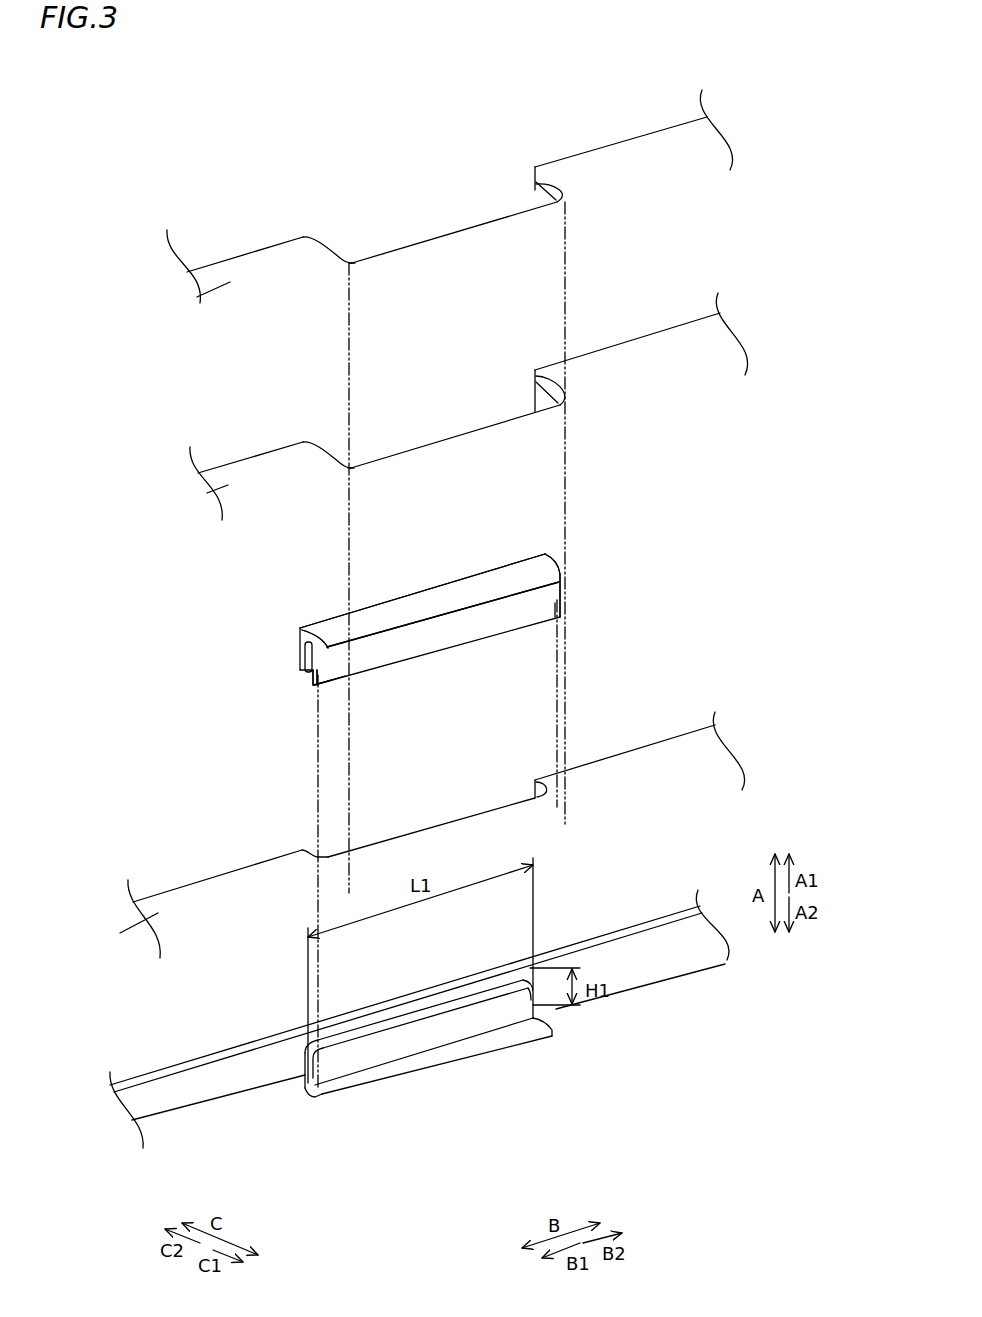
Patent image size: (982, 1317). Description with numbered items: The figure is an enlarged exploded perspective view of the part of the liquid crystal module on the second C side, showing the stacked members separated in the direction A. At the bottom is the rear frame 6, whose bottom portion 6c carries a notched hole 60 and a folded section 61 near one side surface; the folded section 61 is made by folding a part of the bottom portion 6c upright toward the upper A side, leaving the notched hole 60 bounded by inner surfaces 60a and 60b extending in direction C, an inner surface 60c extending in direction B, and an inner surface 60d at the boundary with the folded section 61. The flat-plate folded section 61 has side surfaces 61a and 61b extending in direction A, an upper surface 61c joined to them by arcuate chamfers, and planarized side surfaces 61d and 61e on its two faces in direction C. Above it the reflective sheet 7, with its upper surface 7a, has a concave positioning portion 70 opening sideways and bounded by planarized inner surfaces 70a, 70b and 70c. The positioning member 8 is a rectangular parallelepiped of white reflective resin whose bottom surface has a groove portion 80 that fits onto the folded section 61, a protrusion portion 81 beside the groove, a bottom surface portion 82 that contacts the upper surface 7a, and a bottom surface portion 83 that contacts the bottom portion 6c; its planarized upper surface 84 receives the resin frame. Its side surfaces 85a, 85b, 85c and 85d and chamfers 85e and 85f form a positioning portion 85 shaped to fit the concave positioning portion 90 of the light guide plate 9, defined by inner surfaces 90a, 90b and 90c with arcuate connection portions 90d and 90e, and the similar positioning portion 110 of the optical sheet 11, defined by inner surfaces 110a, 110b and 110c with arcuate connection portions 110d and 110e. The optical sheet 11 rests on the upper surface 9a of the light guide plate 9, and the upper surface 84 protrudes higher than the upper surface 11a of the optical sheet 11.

The rear frame 6 is at (398, 1019).
The bottom portion 6c is at (208, 1108).
The reflective sheet 7 is at (416, 833).
The upper surface 7a is at (200, 900).
The positioning member 8 is at (422, 634).
The light guide plate 9 is at (450, 406).
The upper surface 9a is at (267, 470).
The optical sheet 11 is at (441, 200).
The upper surface 11a is at (268, 267).
The notched hole 60 is at (436, 1019).
The inner surface 60a is at (308, 1097).
The inner surface 60b is at (560, 1025).
The inner surface 60c is at (470, 1058).
The inner surface 60d is at (380, 1067).
The folded section 61 is at (398, 990).
The side surface 61a is at (302, 1072).
The side surface 61b is at (540, 990).
The upper surface 61c is at (485, 990).
The side surface 61d is at (355, 1032).
The side surface 61e is at (423, 1030).
The positioning portion 70 is at (508, 782).
The inner surface 70a is at (317, 855).
The inner surface 70b is at (530, 788).
The inner surface 70c is at (450, 807).
The groove portion 80 is at (300, 660).
The protrusion portion 81 is at (316, 692).
The bottom surface portion 82 is at (330, 690).
The bottom surface portion 83 is at (305, 678).
The upper surface 84 is at (492, 583).
The positioning portion 85 is at (422, 635).
The side surface 85a is at (325, 655).
The side surface 85b is at (560, 592).
The side surface 85c is at (385, 600).
The side surface 85d is at (435, 635).
The chamfer 85e is at (342, 673).
The chamfer 85f is at (555, 603).
The positioning portion 90 is at (525, 380).
The inner surface 90a is at (320, 447).
The inner surface 90b is at (533, 385).
The inner surface 90c is at (462, 428).
The connection portion 90d is at (357, 467).
The connection portion 90e is at (540, 387).
The positioning portion 110 is at (518, 176).
The inner surface 110a is at (318, 242).
The inner surface 110b is at (535, 180).
The inner surface 110c is at (460, 218).
The connection portion 110d is at (357, 257).
The connection portion 110e is at (540, 190).